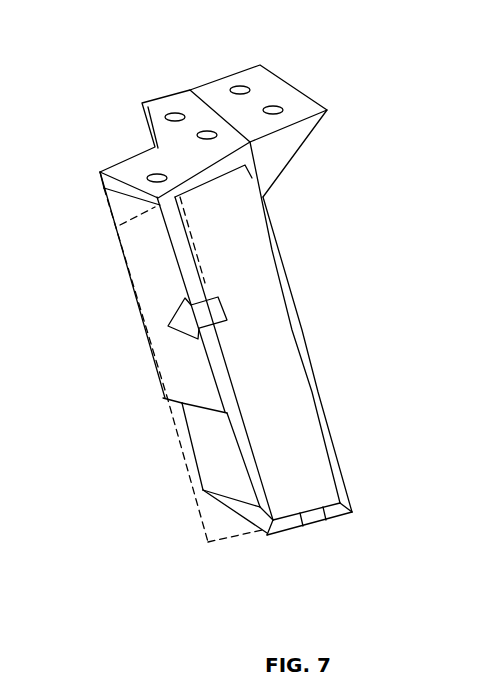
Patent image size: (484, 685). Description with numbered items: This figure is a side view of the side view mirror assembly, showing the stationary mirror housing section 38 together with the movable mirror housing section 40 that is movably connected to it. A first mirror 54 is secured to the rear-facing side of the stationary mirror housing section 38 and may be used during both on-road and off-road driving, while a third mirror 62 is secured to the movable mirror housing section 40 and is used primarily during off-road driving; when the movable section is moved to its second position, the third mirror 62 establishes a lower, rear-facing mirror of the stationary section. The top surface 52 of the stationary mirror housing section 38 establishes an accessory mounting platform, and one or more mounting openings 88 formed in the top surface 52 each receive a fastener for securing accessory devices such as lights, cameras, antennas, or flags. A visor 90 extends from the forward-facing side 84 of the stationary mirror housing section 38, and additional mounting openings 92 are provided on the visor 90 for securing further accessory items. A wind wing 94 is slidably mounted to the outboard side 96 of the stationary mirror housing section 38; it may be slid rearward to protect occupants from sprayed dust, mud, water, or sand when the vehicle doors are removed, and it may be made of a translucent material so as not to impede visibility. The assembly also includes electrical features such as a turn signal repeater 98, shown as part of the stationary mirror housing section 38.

The stationary mirror housing section 38 is at (213, 314).
The movable mirror housing section 40 is at (195, 506).
The top surface 52 is at (150, 103).
The first mirror 54 is at (113, 203).
The third mirror 62 is at (210, 450).
The forward-facing side 84 is at (276, 226).
The mounting openings 88 is at (170, 112).
The visor 90 is at (282, 92).
The additional mounting openings 92 is at (244, 86).
The wind wing 94 is at (230, 538).
The outboard side 96 is at (313, 380).
The turn signal repeater 98 is at (312, 528).